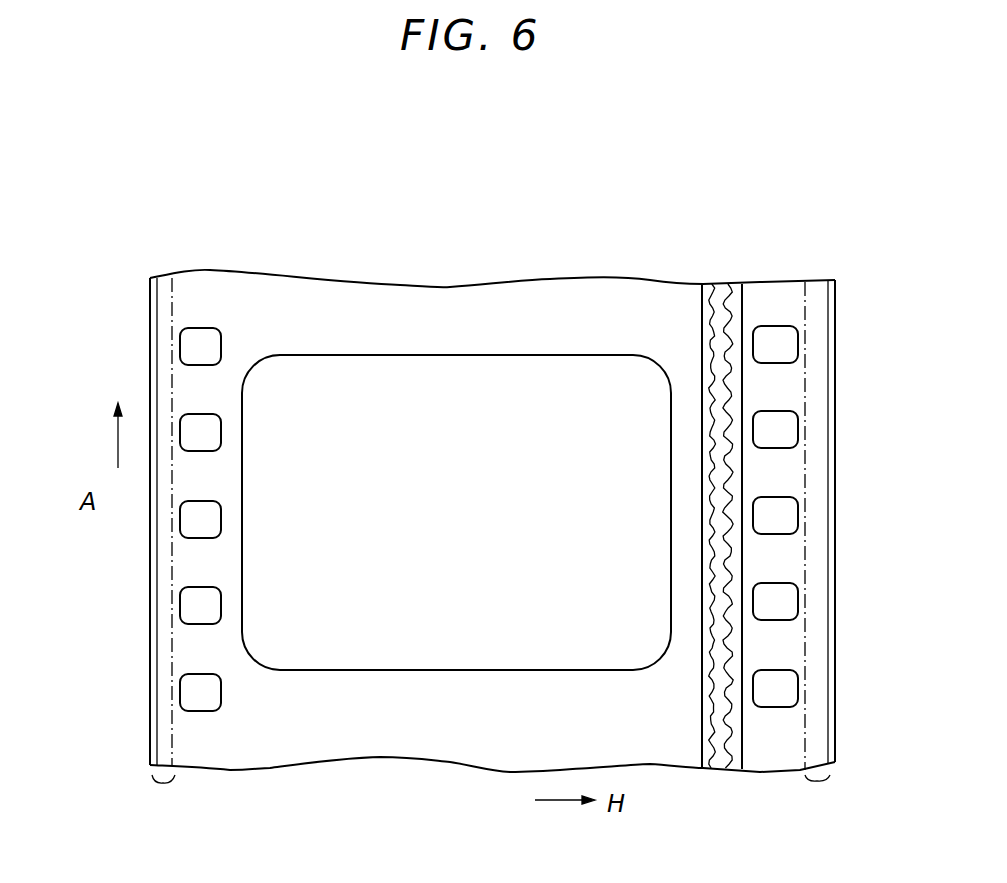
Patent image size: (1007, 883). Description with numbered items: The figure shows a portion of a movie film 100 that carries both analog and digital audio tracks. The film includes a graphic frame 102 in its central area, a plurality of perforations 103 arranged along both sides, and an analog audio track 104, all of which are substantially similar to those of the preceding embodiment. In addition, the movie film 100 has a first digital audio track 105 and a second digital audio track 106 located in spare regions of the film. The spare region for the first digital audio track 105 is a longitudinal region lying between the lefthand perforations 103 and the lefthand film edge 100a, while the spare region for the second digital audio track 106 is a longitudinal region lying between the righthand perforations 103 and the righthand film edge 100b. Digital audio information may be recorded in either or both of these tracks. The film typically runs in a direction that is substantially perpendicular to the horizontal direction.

The movie film 100 is at (412, 285).
The lefthand film edge 100a is at (148, 340).
The righthand film edge 100b is at (838, 447).
The graphic frame 102 is at (502, 385).
The perforations 103 is at (205, 326).
The analog audio track 104 is at (742, 270).
The first digital audio track 105 is at (163, 786).
The second digital audio track 106 is at (817, 784).